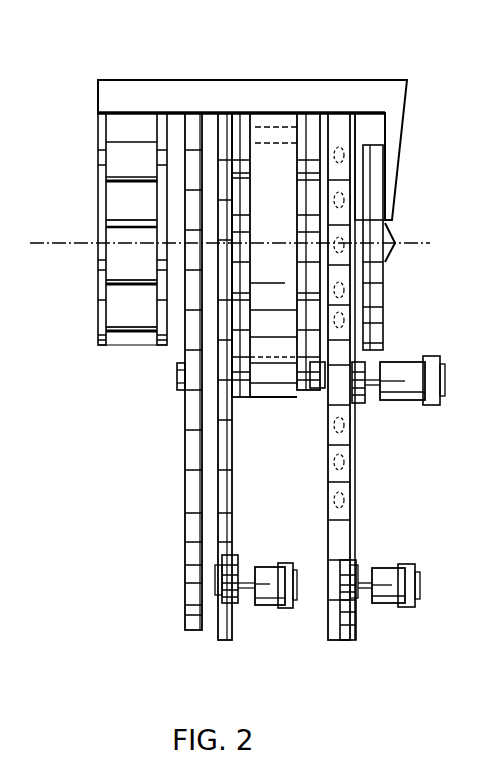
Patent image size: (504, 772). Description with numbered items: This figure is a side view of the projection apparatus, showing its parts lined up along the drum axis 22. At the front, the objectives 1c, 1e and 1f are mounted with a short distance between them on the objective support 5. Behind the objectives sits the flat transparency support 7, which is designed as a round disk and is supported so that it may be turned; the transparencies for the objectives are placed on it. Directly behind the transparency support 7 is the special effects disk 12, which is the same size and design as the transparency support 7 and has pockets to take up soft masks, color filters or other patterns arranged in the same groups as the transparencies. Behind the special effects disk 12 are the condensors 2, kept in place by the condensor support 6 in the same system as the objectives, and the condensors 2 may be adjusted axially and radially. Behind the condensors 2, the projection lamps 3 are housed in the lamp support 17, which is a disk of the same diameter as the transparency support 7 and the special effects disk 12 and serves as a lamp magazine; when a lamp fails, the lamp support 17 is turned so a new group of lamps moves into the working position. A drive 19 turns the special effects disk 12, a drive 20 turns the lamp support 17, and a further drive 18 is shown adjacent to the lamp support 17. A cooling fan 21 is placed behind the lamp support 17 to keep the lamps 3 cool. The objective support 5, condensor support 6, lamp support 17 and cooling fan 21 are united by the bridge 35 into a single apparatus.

The objective 1c is at (140, 216).
The objective 1e is at (140, 276).
The objective 1f is at (136, 331).
The condensor 2 is at (309, 148).
The projection lamp 3 is at (333, 467).
The objective support 5 is at (100, 163).
The condensor support 6 is at (273, 148).
The transparency support 7 is at (192, 448).
The special effects disk 12 is at (223, 487).
The lamp support 17 is at (338, 640).
The motor 18 is at (432, 400).
The drive for special effects disk 19 is at (268, 606).
The drive for lamp support 20 is at (405, 601).
The cooling fan 21 is at (373, 188).
The drum axis 22 is at (43, 241).
The bridge 35 is at (358, 98).